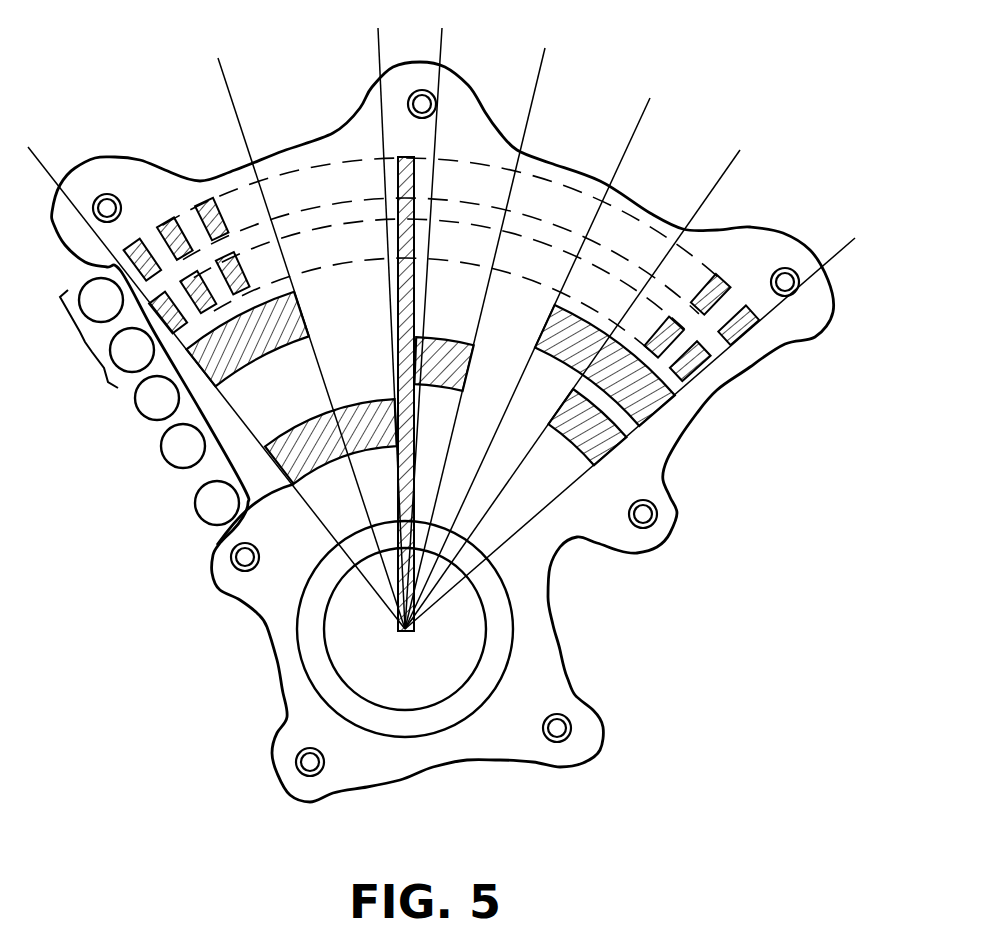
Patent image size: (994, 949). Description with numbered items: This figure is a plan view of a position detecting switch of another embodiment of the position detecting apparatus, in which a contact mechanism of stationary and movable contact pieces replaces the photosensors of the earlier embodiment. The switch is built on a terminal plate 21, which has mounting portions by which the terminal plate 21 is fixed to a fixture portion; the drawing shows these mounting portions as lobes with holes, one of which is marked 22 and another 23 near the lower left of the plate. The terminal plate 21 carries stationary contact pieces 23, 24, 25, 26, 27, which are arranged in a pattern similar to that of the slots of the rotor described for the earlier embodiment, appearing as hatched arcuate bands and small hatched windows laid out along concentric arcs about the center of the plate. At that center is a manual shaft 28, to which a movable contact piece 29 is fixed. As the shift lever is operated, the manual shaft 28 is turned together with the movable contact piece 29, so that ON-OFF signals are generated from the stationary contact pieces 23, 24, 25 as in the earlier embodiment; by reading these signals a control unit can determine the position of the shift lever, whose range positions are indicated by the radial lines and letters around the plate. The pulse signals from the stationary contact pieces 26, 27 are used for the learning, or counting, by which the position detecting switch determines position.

The terminal plate 21 is at (680, 492).
The mounting hole 22 is at (797, 270).
The stationary contact piece 23 is at (213, 553).
The stationary contact piece 24 is at (603, 443).
The stationary contact piece 25 is at (655, 394).
The stationary contact piece 26 is at (735, 362).
The stationary contact piece 27 is at (790, 344).
The manual shaft 28 is at (463, 636).
The movable contact piece 29 is at (551, 570).